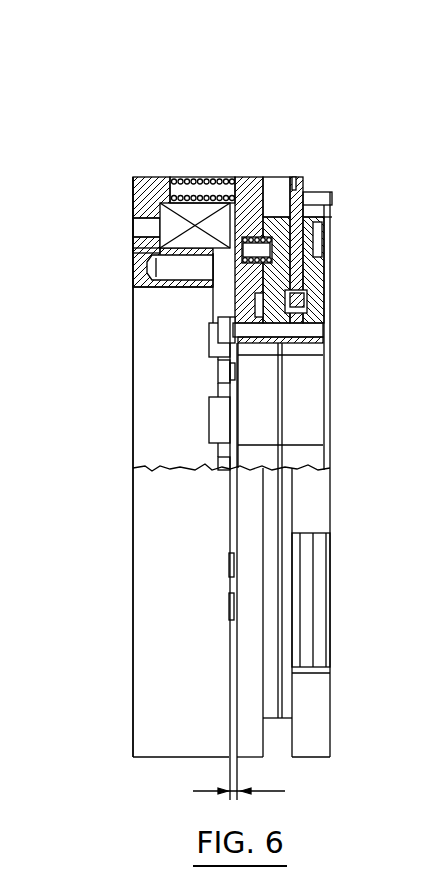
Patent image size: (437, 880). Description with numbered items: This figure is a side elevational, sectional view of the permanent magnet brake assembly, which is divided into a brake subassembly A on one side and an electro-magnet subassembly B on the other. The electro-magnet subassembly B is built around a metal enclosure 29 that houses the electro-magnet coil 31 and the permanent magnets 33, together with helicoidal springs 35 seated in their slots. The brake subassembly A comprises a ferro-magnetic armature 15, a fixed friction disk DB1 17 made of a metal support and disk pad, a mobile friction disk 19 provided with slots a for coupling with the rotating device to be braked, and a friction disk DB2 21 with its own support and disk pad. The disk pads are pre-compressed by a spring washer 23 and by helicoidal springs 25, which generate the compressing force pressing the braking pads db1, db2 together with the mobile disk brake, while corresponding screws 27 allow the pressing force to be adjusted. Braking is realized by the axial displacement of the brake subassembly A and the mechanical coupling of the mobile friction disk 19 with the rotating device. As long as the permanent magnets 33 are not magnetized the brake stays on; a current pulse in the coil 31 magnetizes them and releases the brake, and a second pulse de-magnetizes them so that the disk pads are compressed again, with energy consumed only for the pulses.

The ferro-magnetic armature 15 is at (248, 177).
The friction disk DB1 17 is at (271, 214).
The mobile friction disk 19 is at (303, 177).
The friction disk DB2 21 is at (320, 222).
The spring washer 23 is at (258, 305).
The helicoidal springs 25 is at (310, 296).
The screws 27 is at (218, 375).
The metal enclosure 29 is at (146, 177).
The electro-magnet coil 31 is at (173, 223).
The permanent magnets 33 is at (222, 424).
The helicoidal springs 35 is at (206, 177).
The slots a is at (334, 194).
The friction disk DB1 db1 is at (312, 708).
The friction disk DB2 db2 is at (247, 708).
The brake subassembly A is at (236, 61).
The electro-magnet subassembly B is at (133, 61).